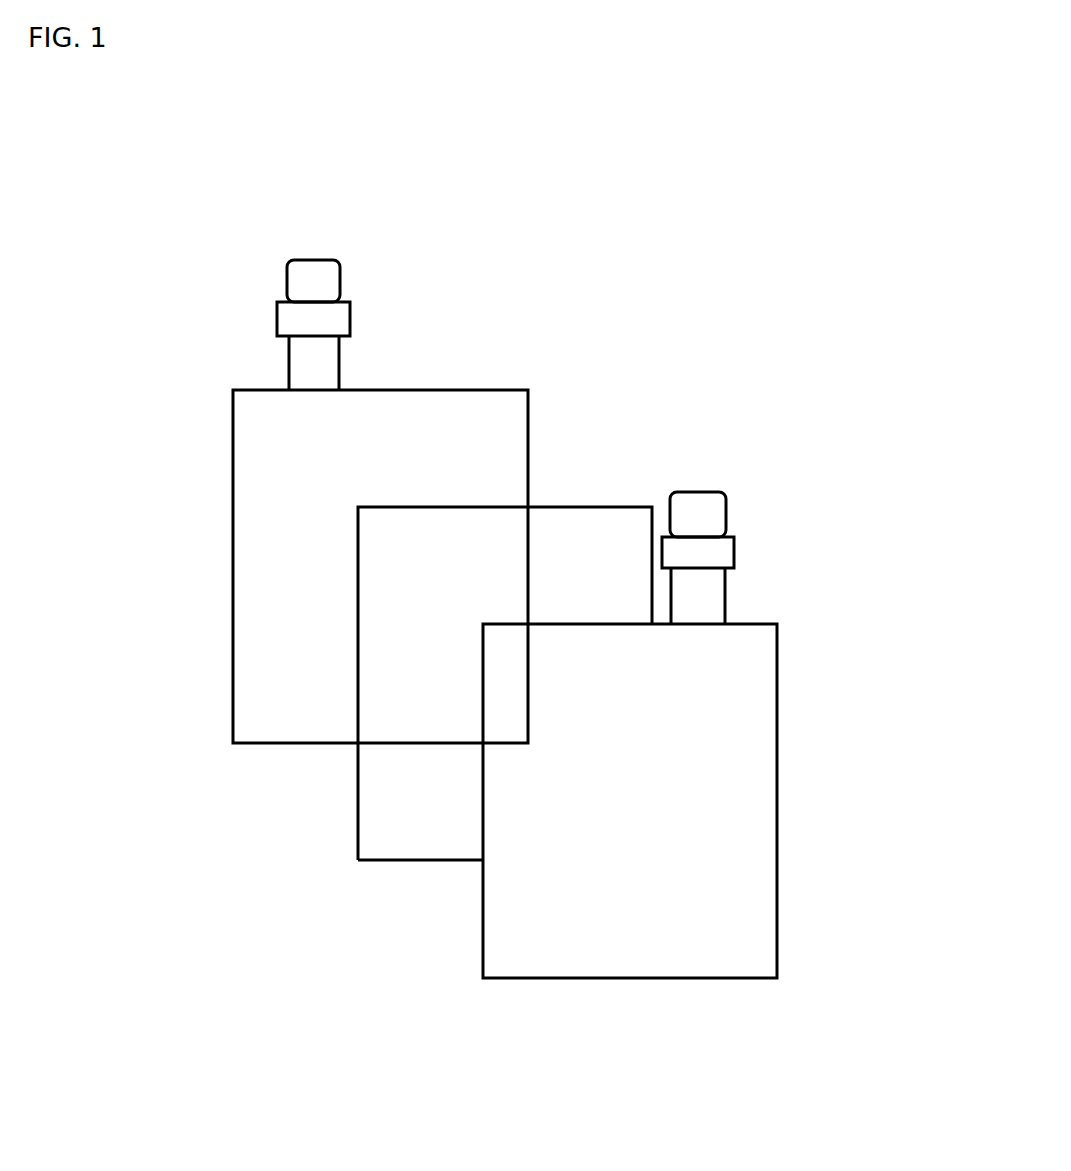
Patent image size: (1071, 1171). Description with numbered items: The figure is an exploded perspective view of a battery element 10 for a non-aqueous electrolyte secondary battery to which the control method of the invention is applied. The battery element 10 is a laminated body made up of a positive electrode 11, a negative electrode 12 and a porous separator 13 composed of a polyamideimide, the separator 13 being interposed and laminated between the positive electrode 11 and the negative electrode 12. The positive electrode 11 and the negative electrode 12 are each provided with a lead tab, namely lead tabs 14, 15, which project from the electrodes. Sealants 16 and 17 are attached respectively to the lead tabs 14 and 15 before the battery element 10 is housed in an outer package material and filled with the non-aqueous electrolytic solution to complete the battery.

The battery element 10 is at (727, 236).
The positive electrode 11 is at (210, 524).
The negative electrode 12 is at (805, 795).
The porous separator 13 is at (595, 507).
The lead tab 14 is at (287, 277).
The lead tab 15 is at (726, 511).
The sealant 16 is at (350, 318).
The sealant 17 is at (734, 553).